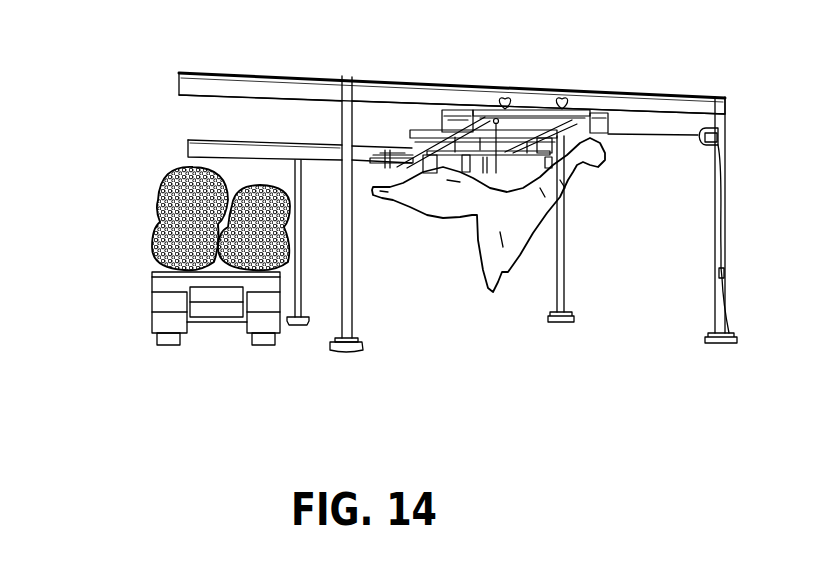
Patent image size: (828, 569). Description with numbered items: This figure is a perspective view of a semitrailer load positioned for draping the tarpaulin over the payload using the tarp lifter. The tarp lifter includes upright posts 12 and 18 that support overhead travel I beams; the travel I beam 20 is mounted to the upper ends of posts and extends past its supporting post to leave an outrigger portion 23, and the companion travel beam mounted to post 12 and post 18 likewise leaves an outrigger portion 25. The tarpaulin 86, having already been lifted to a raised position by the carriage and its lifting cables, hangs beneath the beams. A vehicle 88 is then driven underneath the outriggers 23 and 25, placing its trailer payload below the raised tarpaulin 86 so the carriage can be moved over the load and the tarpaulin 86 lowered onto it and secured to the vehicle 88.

The upright post 12 is at (713, 218).
The upright post 18 is at (345, 309).
The travel I beam 20 is at (681, 93).
The outrigger portion 23 is at (267, 83).
The outrigger portion 25 is at (245, 150).
The tarpaulin 86 is at (562, 180).
The vehicle 88 is at (128, 298).